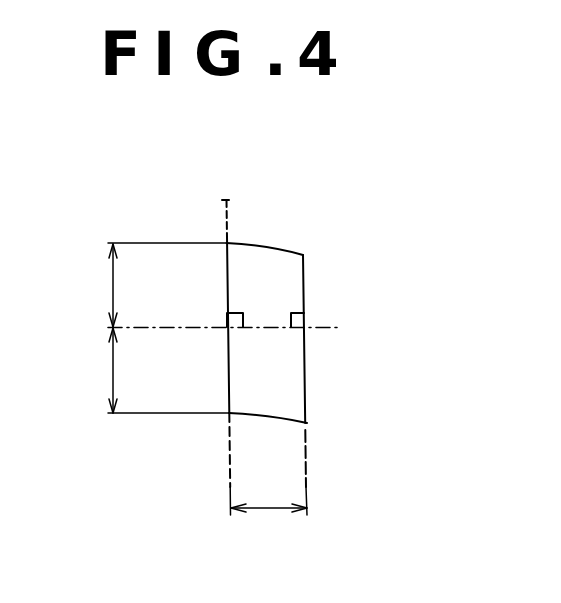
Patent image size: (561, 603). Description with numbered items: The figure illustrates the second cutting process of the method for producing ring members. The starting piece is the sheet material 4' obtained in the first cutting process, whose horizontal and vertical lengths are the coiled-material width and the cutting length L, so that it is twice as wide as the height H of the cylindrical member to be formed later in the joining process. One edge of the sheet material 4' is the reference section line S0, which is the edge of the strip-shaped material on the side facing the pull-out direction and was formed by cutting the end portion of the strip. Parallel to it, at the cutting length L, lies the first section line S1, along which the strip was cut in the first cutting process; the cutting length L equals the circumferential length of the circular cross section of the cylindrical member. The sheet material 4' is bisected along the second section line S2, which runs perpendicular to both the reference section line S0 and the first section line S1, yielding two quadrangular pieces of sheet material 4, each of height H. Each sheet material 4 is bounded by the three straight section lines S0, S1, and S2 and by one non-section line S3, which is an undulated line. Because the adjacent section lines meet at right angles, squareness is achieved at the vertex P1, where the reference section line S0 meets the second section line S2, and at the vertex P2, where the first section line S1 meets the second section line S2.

The sheet material 4 is at (267, 317).
The sheet material 4' is at (397, 427).
The first section line S1 is at (227, 200).
The second section line S2 is at (330, 322).
The non-section line S3 is at (270, 248).
The reference section line S0 is at (304, 277).
The vertex P1 is at (305, 328).
The vertex P2 is at (227, 328).
The height H is at (112, 285).
The cutting length L is at (268, 510).